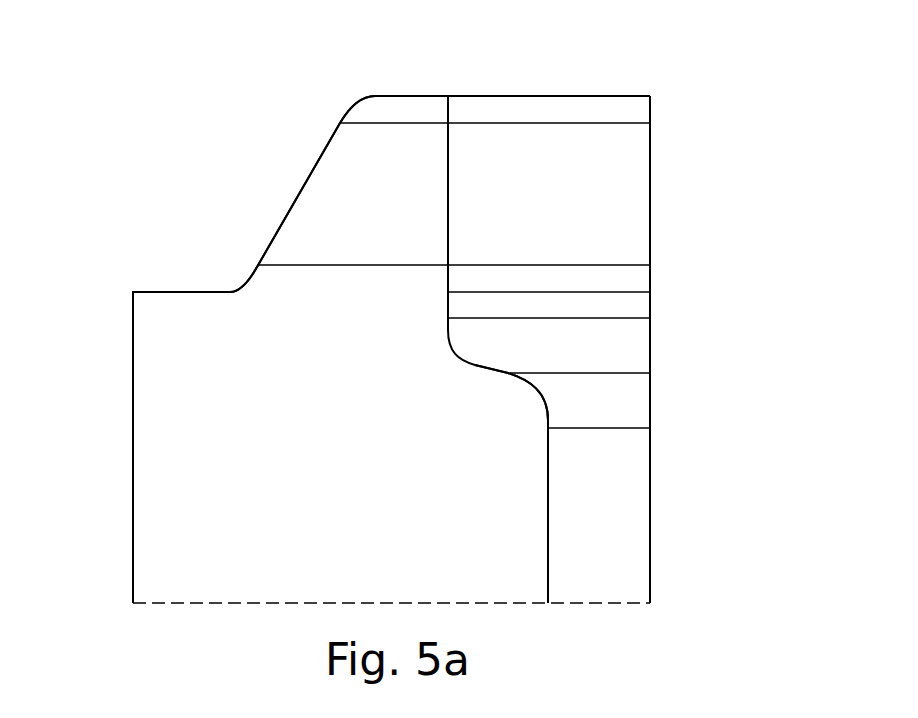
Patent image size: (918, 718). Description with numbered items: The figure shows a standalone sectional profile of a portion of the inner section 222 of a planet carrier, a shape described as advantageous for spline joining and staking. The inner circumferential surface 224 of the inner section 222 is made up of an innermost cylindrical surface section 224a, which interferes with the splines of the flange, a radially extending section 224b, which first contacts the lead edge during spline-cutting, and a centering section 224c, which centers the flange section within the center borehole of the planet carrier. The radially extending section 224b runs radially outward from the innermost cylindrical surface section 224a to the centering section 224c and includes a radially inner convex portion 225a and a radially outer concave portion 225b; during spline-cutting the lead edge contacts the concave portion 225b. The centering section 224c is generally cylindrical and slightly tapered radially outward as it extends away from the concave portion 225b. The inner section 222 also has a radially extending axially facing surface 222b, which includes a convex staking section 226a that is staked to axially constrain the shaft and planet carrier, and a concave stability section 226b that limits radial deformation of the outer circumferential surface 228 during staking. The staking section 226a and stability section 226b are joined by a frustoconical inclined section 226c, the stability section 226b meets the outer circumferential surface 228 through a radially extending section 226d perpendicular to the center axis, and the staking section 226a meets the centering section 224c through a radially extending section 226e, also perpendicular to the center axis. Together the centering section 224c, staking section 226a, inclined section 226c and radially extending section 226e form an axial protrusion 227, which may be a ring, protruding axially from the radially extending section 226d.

The inner section 222 is at (202, 508).
The radially extending axially facing surface 222b is at (319, 80).
The inner circumferential surface 224 is at (638, 488).
The innermost cylindrical surface section 224a is at (566, 478).
The radially extending section 224b is at (500, 392).
The centering section 224c is at (455, 177).
The radially inner convex portion 225a is at (565, 395).
The radially outer concave portion 225b is at (483, 349).
The staking section 226a is at (338, 109).
The stability section 226b is at (215, 271).
The inclined section 226c is at (293, 178).
The radially extending section 226d is at (128, 288).
The radially extending section 226e is at (406, 96).
The axial protrusion 227 is at (420, 165).
The outer circumferential surface 228 is at (122, 413).